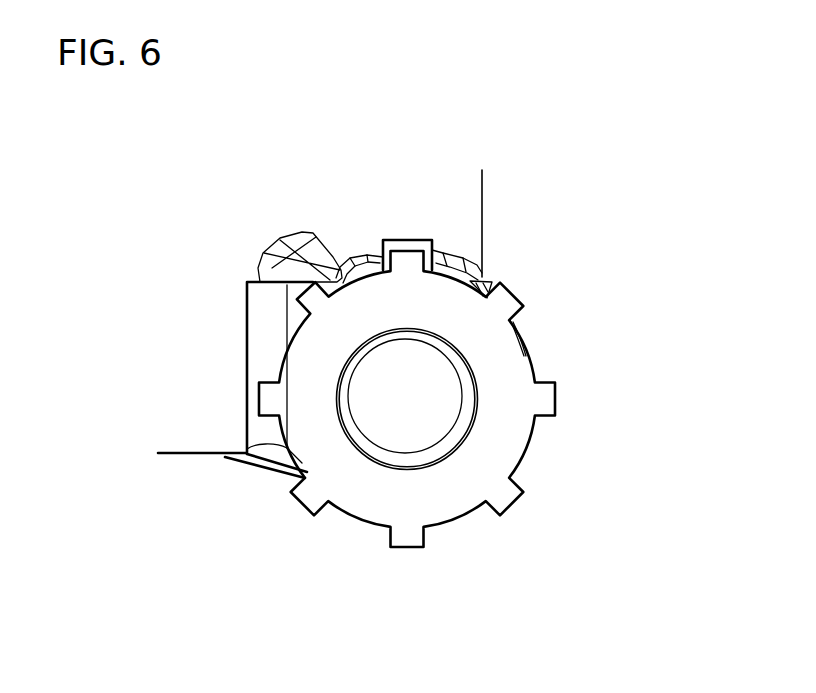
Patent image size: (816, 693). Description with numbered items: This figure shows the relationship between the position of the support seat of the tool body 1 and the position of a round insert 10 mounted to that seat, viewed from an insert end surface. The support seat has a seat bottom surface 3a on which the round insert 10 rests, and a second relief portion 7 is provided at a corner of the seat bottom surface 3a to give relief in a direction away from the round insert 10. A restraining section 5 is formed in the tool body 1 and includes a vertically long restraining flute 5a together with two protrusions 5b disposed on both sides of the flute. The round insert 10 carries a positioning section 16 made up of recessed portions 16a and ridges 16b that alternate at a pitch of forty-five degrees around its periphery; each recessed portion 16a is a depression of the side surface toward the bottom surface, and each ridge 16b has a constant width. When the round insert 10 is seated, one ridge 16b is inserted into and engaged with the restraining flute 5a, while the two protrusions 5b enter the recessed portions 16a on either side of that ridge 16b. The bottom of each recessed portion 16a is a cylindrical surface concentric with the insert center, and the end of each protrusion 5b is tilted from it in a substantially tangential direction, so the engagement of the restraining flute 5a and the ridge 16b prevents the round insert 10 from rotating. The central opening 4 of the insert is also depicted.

The tool body 1 is at (389, 212).
The seat bottom surface 3a is at (292, 450).
The shaft bore 4 is at (461, 397).
The restraining section 5 is at (479, 205).
The restraining flute 5a is at (417, 241).
The protrusions 5b is at (433, 251).
The second relief portion 7 is at (262, 331).
The round insert 10 is at (512, 398).
The positioning section 16 is at (527, 450).
The recessed portions 16a is at (303, 234).
The ridges 16b is at (415, 266).